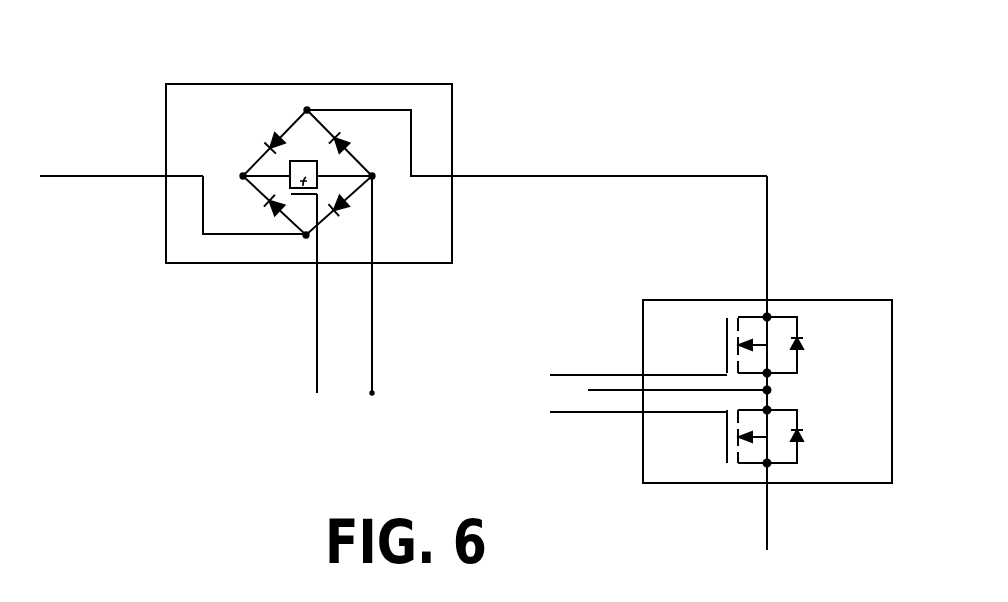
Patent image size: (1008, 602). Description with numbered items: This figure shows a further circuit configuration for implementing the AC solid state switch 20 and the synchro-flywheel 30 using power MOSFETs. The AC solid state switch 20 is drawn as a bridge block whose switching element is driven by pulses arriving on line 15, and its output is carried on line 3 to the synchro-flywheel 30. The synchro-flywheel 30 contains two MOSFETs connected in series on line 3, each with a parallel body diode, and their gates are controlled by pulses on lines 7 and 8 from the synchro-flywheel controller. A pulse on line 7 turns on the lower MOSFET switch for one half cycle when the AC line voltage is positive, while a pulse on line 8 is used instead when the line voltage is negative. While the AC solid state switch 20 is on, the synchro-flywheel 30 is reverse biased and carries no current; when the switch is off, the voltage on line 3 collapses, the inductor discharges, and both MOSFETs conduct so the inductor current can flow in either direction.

The line 3 is at (767, 175).
The line 7 is at (603, 412).
The line 8 is at (565, 375).
The line 15 is at (317, 360).
The AC solid state switch 20 is at (355, 84).
The synchro-flywheel 30 is at (835, 300).